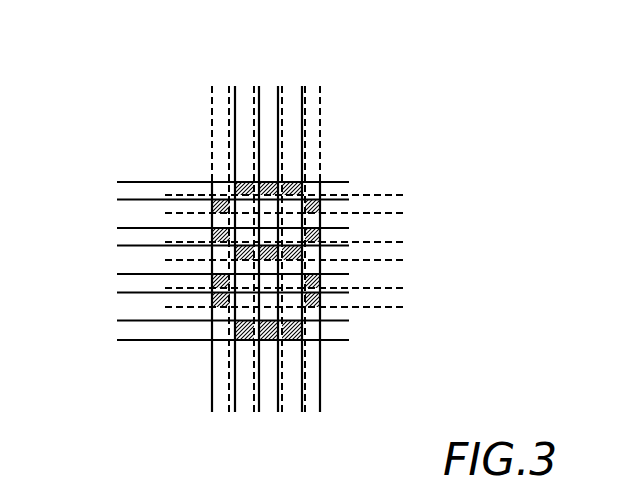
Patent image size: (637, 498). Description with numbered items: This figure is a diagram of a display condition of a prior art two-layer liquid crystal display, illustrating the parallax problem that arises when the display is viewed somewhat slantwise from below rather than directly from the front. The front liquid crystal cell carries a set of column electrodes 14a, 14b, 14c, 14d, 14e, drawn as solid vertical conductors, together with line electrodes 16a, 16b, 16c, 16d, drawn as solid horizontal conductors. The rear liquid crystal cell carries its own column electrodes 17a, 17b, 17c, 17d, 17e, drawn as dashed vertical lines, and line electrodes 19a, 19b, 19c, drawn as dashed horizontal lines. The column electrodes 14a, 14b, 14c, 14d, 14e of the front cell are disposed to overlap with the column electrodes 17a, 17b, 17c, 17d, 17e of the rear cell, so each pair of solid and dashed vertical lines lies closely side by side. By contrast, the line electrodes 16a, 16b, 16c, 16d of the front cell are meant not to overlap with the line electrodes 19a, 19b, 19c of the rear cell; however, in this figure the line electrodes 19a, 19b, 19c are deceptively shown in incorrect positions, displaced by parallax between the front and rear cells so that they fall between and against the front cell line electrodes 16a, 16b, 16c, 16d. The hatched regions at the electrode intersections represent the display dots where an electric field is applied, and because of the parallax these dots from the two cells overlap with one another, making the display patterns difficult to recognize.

The column electrode 14a is at (199, 274).
The column electrode 14b is at (237, 274).
The column electrode 14c is at (272, 274).
The column electrode 14d is at (302, 274).
The column electrode 14e is at (331, 274).
The line electrode 16a is at (209, 184).
The line electrode 16b is at (209, 232).
The line electrode 16c is at (209, 275).
The line electrode 16d is at (209, 325).
The column electrode 17a is at (207, 230).
The column electrode 17b is at (236, 230).
The column electrode 17c is at (266, 230).
The column electrode 17d is at (294, 230).
The column electrode 17e is at (325, 230).
The line electrode 19a is at (314, 188).
The line electrode 19b is at (314, 240).
The line electrode 19c is at (314, 291).